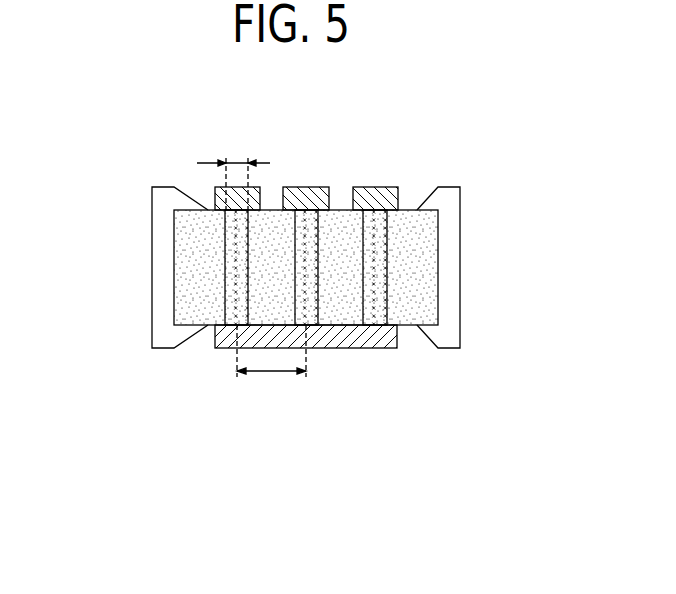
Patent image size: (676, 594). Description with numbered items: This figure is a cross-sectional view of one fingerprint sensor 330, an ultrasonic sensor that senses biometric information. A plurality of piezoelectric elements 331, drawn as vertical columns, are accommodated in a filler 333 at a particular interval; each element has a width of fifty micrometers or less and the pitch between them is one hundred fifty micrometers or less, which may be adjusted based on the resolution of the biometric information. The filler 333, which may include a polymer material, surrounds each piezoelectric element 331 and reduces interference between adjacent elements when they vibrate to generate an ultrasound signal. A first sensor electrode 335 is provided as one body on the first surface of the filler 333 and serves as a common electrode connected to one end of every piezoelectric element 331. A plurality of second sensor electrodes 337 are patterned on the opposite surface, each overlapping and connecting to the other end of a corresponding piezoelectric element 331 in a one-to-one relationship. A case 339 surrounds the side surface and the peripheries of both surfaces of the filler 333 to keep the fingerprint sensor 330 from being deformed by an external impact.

The fingerprint sensor 330 is at (122, 145).
The piezoelectric elements 331 is at (378, 262).
The filler 333 is at (198, 292).
The first sensor electrode 335 is at (387, 338).
The second sensor electrodes 337 is at (385, 190).
The case 339 is at (162, 236).